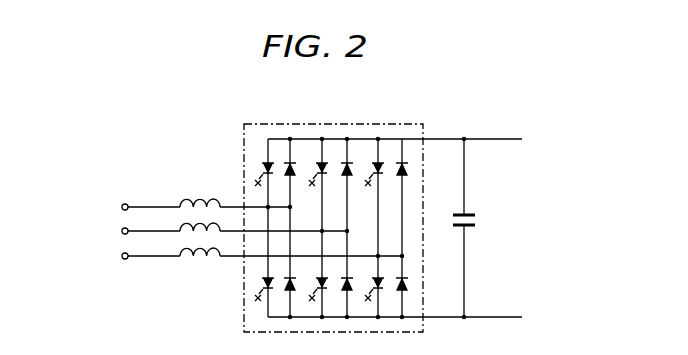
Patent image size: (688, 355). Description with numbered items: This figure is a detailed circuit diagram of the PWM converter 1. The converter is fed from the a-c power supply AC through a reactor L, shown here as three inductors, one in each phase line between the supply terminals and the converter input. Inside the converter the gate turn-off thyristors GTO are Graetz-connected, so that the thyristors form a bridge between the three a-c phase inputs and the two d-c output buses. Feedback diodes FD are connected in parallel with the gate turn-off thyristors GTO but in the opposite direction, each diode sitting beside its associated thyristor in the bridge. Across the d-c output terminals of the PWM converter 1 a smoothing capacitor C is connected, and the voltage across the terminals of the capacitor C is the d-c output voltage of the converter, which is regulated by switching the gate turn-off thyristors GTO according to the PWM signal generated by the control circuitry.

The PWM converter 1 is at (243, 146).
The gate turn-off thyristors GTO is at (262, 165).
The feedback diodes FD is at (292, 162).
The a-c power supply AC is at (118, 200).
The reactor L is at (190, 258).
The smoothing capacitor C is at (478, 222).